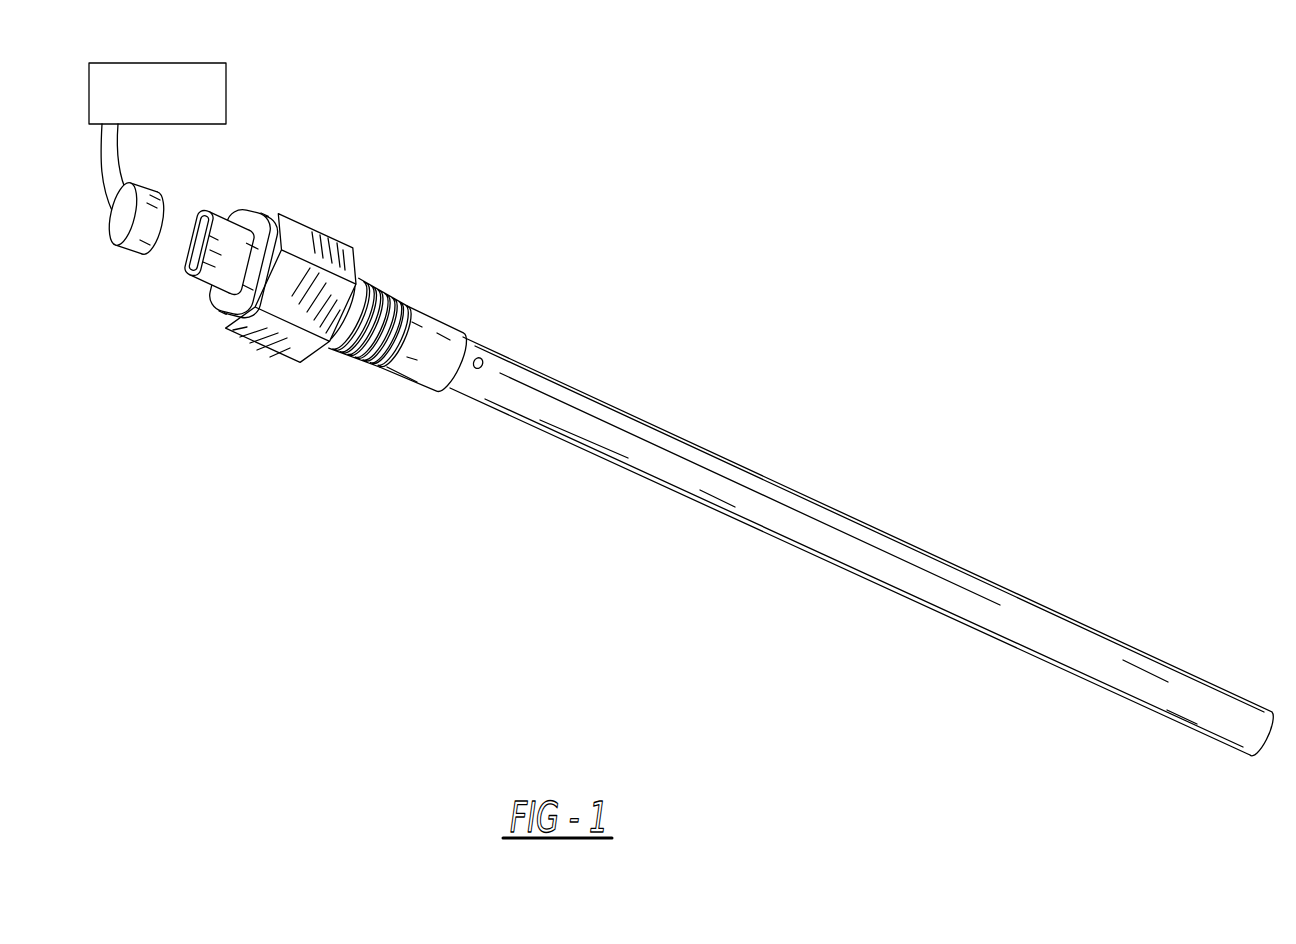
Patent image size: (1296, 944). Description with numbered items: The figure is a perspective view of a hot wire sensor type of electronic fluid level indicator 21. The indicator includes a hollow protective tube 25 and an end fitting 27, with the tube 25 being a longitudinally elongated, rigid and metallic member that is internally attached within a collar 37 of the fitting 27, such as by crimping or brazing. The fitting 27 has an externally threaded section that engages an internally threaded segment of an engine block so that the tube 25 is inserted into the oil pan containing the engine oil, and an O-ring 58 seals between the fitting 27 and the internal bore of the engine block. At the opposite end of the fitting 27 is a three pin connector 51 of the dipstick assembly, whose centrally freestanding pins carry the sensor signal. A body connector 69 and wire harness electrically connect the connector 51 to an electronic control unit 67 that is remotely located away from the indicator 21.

The electronic fluid level indicator 21 is at (728, 445).
The hollow protective tube 25 is at (880, 545).
The end fitting 27 is at (302, 234).
The collar 37 is at (432, 326).
The three pin connector 51 is at (222, 237).
The O-ring 58 is at (363, 270).
The electronic control unit 67 is at (227, 90).
The body connector 69 is at (145, 250).